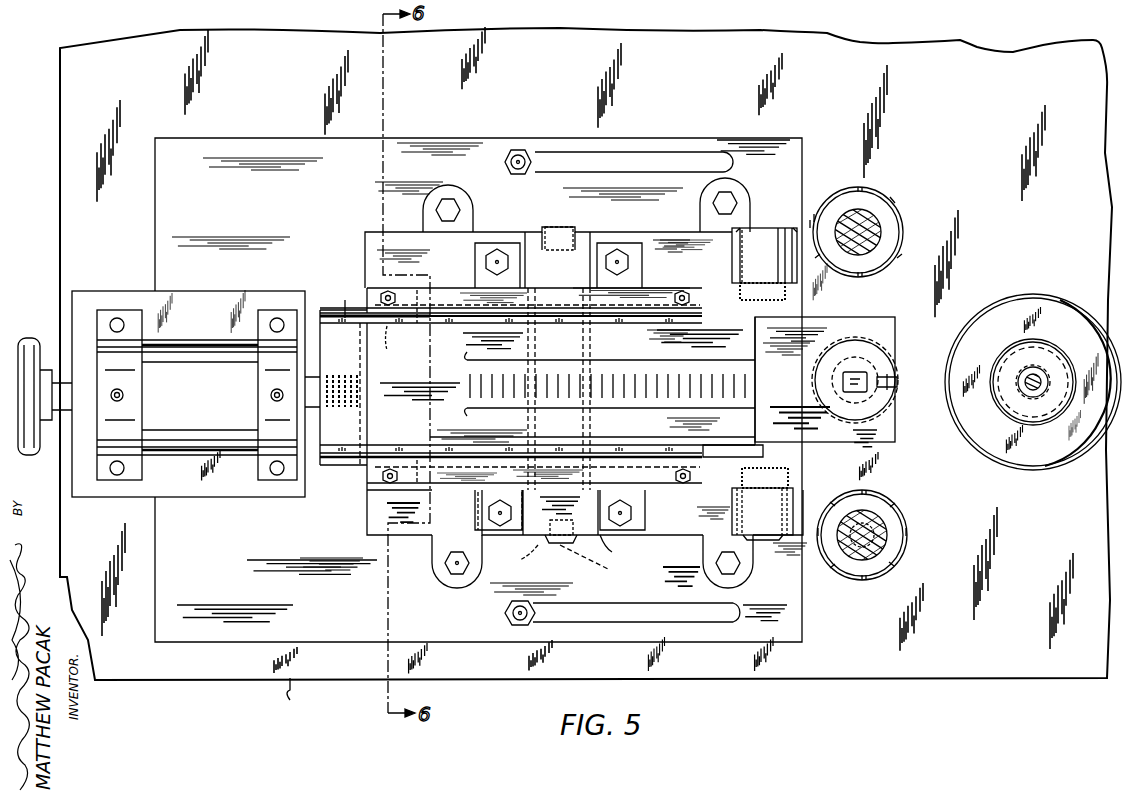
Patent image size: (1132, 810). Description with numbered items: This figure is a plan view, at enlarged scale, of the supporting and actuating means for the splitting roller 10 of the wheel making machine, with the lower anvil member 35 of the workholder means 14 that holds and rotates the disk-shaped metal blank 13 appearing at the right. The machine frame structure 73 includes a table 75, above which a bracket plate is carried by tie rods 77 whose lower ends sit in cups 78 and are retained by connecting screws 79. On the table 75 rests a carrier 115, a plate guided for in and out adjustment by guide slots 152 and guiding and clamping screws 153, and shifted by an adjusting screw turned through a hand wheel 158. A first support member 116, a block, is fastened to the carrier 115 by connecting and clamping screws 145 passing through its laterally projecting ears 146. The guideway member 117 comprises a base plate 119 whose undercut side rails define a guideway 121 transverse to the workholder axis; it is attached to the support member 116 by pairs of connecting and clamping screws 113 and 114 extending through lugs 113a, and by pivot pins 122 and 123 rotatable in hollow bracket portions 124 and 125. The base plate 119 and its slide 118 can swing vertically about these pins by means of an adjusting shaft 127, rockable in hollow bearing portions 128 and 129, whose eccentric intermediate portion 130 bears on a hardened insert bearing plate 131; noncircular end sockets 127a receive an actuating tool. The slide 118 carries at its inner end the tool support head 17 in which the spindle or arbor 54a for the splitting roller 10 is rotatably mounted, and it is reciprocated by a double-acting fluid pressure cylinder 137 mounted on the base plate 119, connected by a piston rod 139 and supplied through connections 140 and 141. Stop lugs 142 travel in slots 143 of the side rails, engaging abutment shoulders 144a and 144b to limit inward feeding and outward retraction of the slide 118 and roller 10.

The splitting roller 10 is at (897, 386).
The disk-shaped metal blank 13 is at (1030, 342).
The workholder means 14 is at (1052, 455).
The tool carrying head 17 is at (875, 320).
The anvil member 35 is at (1000, 342).
The shaft or arbor 54a is at (855, 350).
The frame structure 73 is at (303, 692).
The table 75 is at (478, 680).
The tie rods 77 is at (872, 545).
The cups 78 is at (888, 535).
The connecting screws 79 is at (905, 515).
The connecting and clamping screws 113 is at (489, 516).
The laterally projecting lugs 113a is at (489, 506).
The connecting and clamping screws 114 is at (497, 258).
The carrier 115 is at (187, 645).
The first support member 116 is at (367, 519).
The guideway member 117 is at (207, 291).
The slide 118 is at (338, 470).
The base plate 119 is at (316, 295).
The guideway 121 is at (345, 300).
The pivot pin or trunnion 122 is at (768, 541).
The pivot pin or trunnion 123 is at (758, 228).
The hollow bracket portion 124 is at (790, 510).
The hollow bracket portion 125 is at (795, 228).
The adjusting shaft 127 is at (514, 557).
The noncircular end sockets 127a is at (607, 562).
The hollow bearing portion 128 is at (624, 547).
The hollow bearing portion 129 is at (582, 235).
The eccentric intermediate portion 130 is at (575, 355).
The hardened insert bearing plate 131 is at (580, 420).
The fluid pressure cylinder 137 is at (185, 343).
The piston rod 139 is at (320, 370).
The fluid pressure supply and exhaust connection 140 is at (123, 395).
The fluid pressure supply and exhaust connection 141 is at (271, 395).
The stop lugs 142 is at (440, 290).
The slots 143 is at (435, 320).
The abutment shoulder 144a is at (559, 389).
The abutment shoulder 144b is at (393, 338).
The connecting and clamping screws 145 is at (455, 570).
The laterally projecting ears 146 is at (440, 580).
The guide slots 152 is at (600, 612).
The guiding and clamping screws 153 is at (505, 614).
The hand wheel 158 is at (30, 340).